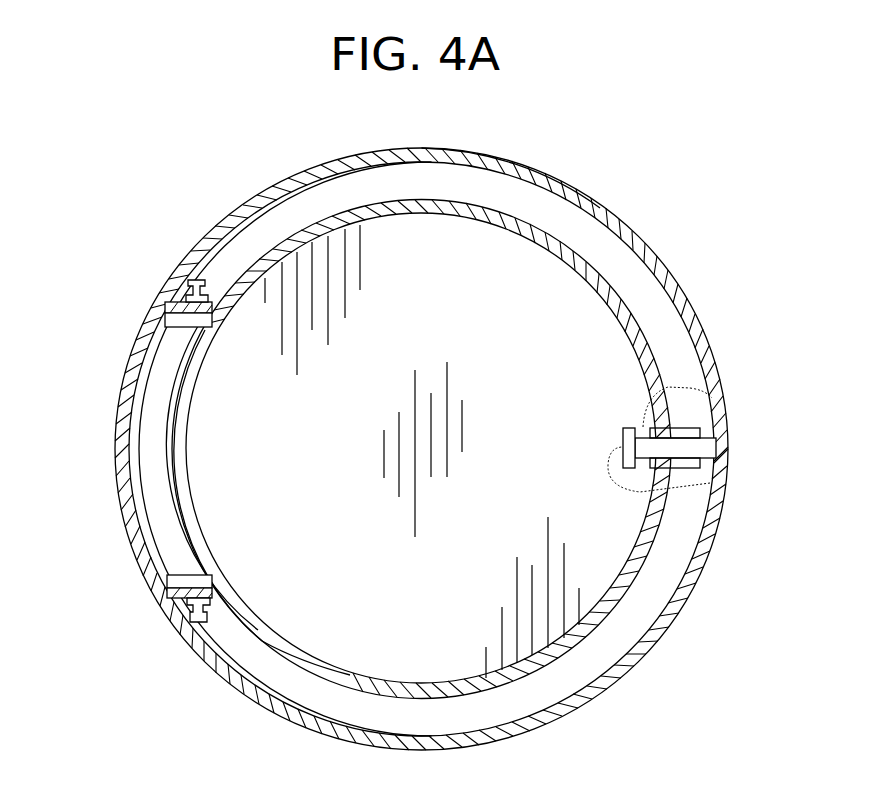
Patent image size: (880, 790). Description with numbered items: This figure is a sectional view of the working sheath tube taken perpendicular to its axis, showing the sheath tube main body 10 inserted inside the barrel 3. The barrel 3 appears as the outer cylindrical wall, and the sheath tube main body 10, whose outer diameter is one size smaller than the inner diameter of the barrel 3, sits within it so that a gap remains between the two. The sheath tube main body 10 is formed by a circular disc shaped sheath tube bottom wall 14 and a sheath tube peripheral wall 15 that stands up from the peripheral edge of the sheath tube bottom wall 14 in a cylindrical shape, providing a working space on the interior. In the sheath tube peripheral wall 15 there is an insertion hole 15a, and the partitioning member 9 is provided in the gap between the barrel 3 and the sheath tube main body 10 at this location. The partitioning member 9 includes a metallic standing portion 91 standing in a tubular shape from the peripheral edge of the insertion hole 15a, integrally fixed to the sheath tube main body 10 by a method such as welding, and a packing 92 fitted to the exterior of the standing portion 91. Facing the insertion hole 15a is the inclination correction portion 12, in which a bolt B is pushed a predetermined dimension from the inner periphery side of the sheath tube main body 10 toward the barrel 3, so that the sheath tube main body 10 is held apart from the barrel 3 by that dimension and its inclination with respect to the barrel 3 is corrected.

The barrel 3 is at (556, 210).
The partitioning member 9 is at (126, 450).
The sheath tube main body 10 is at (699, 180).
The inclination correction portion 12 is at (713, 398).
The sheath tube bottom wall 14 is at (562, 289).
The sheath tube peripheral wall 15 is at (568, 249).
The insertion hole 15a is at (208, 333).
The standing portion 91 is at (168, 312).
The packing 92 is at (160, 306).
The bolt B is at (710, 483).